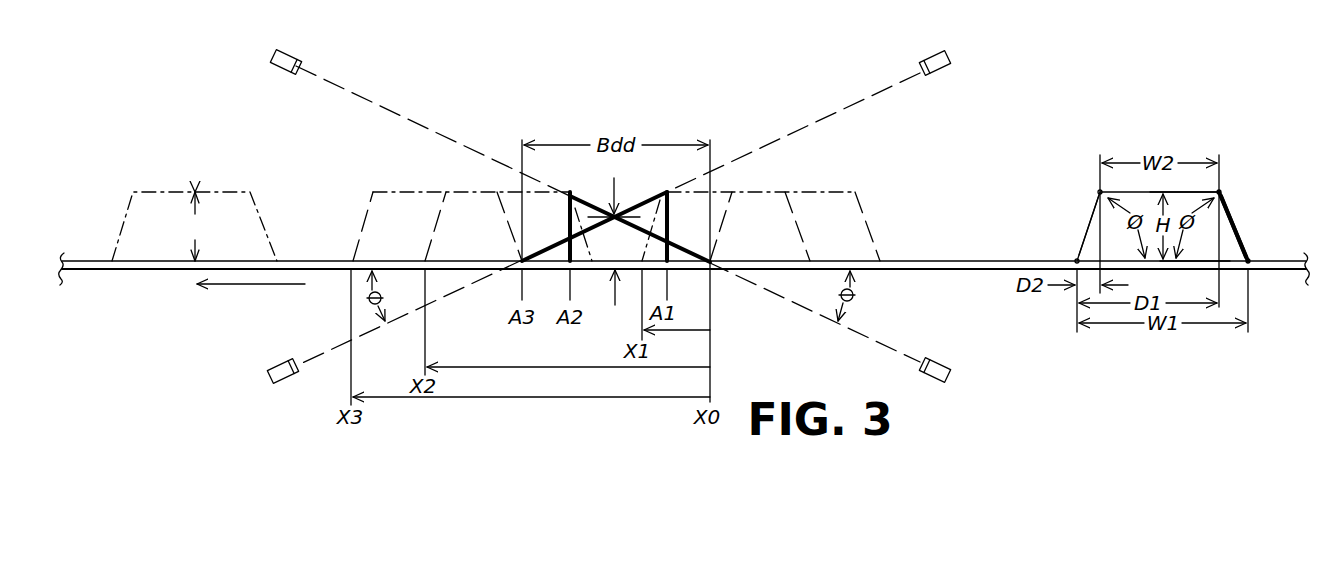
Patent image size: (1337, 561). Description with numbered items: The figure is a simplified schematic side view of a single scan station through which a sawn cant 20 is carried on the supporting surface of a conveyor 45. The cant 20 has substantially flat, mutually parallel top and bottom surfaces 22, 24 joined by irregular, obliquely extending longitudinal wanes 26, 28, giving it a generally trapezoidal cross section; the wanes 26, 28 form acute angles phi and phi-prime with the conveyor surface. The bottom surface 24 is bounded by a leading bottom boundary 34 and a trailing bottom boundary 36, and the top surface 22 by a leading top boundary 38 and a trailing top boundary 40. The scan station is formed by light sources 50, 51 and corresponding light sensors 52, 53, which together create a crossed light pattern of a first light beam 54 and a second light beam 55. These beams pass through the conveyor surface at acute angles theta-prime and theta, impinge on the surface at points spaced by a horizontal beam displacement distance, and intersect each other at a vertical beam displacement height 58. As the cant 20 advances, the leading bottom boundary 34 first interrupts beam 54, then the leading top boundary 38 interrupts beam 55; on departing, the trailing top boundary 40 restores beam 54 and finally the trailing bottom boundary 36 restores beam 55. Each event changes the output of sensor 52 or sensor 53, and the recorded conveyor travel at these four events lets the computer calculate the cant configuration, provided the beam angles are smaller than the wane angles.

The cant 20 is at (365, 213).
The top surface 22 is at (1205, 192).
The bottom surface 24 is at (1194, 264).
The longitudinal wane 26 is at (1088, 225).
The longitudinal wane 28 is at (1233, 223).
The leading bottom boundary 34 is at (1077, 259).
The trailing bottom boundary 36 is at (1255, 258).
The leading top boundary 38 is at (1099, 192).
The trailing top boundary 40 is at (1221, 191).
The conveyor 45 is at (975, 262).
The light source 50 is at (941, 362).
The light source 51 is at (280, 362).
The light sensor 52 is at (292, 58).
The light sensor 53 is at (926, 58).
The first light beam 54 is at (398, 114).
The second light beam 55 is at (816, 122).
The vertical beam displacement height 58 is at (614, 241).